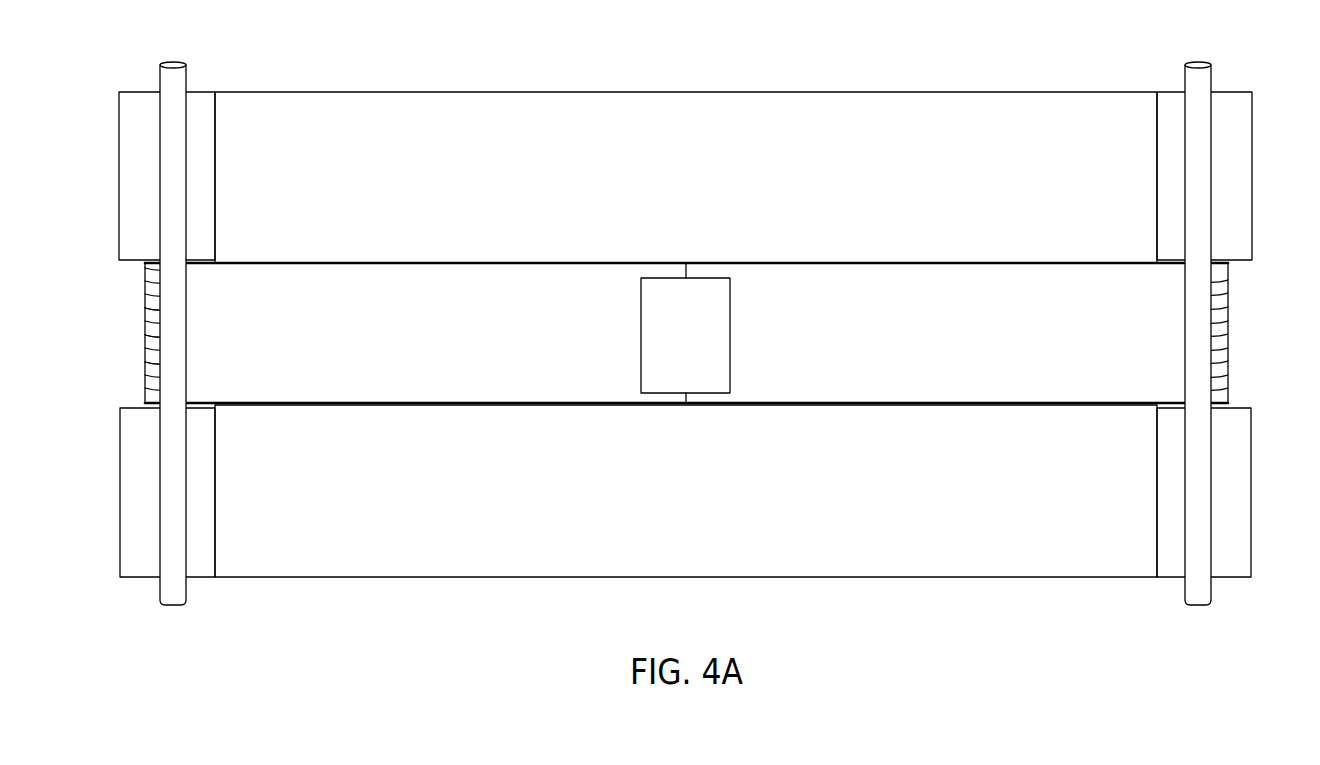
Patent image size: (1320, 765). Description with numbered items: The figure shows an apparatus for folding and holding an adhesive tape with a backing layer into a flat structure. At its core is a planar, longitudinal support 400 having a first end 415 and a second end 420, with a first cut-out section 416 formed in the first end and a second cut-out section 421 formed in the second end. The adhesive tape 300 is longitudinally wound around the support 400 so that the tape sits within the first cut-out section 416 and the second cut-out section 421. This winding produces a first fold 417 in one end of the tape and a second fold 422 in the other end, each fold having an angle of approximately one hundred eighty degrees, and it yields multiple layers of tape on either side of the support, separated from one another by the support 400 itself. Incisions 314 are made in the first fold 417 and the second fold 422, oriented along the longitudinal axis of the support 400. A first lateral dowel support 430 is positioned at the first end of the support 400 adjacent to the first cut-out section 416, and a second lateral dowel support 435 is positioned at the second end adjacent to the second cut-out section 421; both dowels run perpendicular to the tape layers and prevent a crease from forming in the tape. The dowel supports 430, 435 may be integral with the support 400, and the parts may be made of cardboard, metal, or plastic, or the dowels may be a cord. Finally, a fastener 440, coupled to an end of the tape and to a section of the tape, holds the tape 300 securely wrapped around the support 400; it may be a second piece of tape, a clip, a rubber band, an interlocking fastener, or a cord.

The planar, longitudinal support 400 is at (762, 92).
The adhesive tape 300 is at (762, 263).
The first lateral dowel support 430 is at (173, 62).
The second lateral dowel support 435 is at (1200, 62).
The first end 415 is at (119, 177).
The second end 420 is at (1252, 178).
The first cut-out section 416 is at (140, 406).
The second cut-out section 421 is at (1232, 406).
The first fold 417 is at (145, 286).
The second fold 422 is at (1228, 298).
The incisions 314 is at (150, 367).
The fastener 440 is at (730, 330).